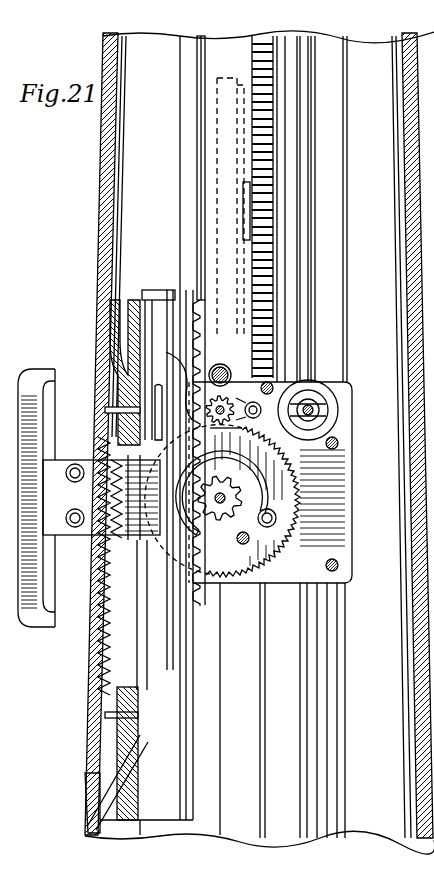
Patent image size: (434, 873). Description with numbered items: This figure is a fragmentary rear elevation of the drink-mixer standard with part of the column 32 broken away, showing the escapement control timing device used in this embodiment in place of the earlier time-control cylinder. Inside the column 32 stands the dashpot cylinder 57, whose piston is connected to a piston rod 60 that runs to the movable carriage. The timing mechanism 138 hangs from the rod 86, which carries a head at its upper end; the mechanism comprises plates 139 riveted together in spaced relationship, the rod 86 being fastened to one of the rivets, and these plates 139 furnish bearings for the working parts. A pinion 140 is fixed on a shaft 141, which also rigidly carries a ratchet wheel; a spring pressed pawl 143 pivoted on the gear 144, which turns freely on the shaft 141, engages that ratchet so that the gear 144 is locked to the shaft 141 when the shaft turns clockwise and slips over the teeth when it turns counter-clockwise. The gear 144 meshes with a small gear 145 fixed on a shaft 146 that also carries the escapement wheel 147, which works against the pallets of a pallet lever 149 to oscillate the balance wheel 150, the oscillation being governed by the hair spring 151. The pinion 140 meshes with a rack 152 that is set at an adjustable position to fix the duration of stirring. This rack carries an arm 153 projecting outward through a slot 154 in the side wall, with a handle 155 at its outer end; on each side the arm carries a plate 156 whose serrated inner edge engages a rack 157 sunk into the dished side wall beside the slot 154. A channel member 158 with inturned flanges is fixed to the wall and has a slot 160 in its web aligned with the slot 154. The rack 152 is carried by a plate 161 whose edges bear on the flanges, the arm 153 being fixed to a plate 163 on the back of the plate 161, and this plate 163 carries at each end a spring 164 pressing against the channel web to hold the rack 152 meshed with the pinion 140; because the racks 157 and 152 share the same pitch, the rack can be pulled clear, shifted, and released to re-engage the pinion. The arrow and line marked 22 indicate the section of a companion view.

The section line 22 is at (85, 317).
The column 32 is at (420, 40).
The dashpot cylinder 57 is at (340, 715).
The piston rod 60 is at (304, 42).
The rod 86 is at (198, 153).
The timing mechanism 138 is at (290, 482).
The plates 139 is at (350, 494).
The pinion 140 is at (247, 477).
The shaft 141 is at (236, 540).
The spring pressed pawl 143 is at (298, 518).
The gear 144 is at (290, 530).
The small gear 145 is at (243, 358).
The shaft 146 is at (268, 400).
The escapement wheel 147 is at (169, 379).
The pallet lever 149 is at (308, 382).
The balance wheel 150 is at (333, 395).
The hair spring 151 is at (318, 410).
The rack 152 is at (182, 293).
The arm 153 is at (148, 523).
The slot 154 is at (120, 666).
The handle 155 is at (75, 358).
The plate 156 is at (65, 475).
The rack 157 is at (110, 418).
The channel member 158 is at (163, 813).
The slot 160 is at (133, 593).
The plate 161 is at (167, 300).
The plate 163 is at (200, 608).
The spring 164 is at (157, 368).